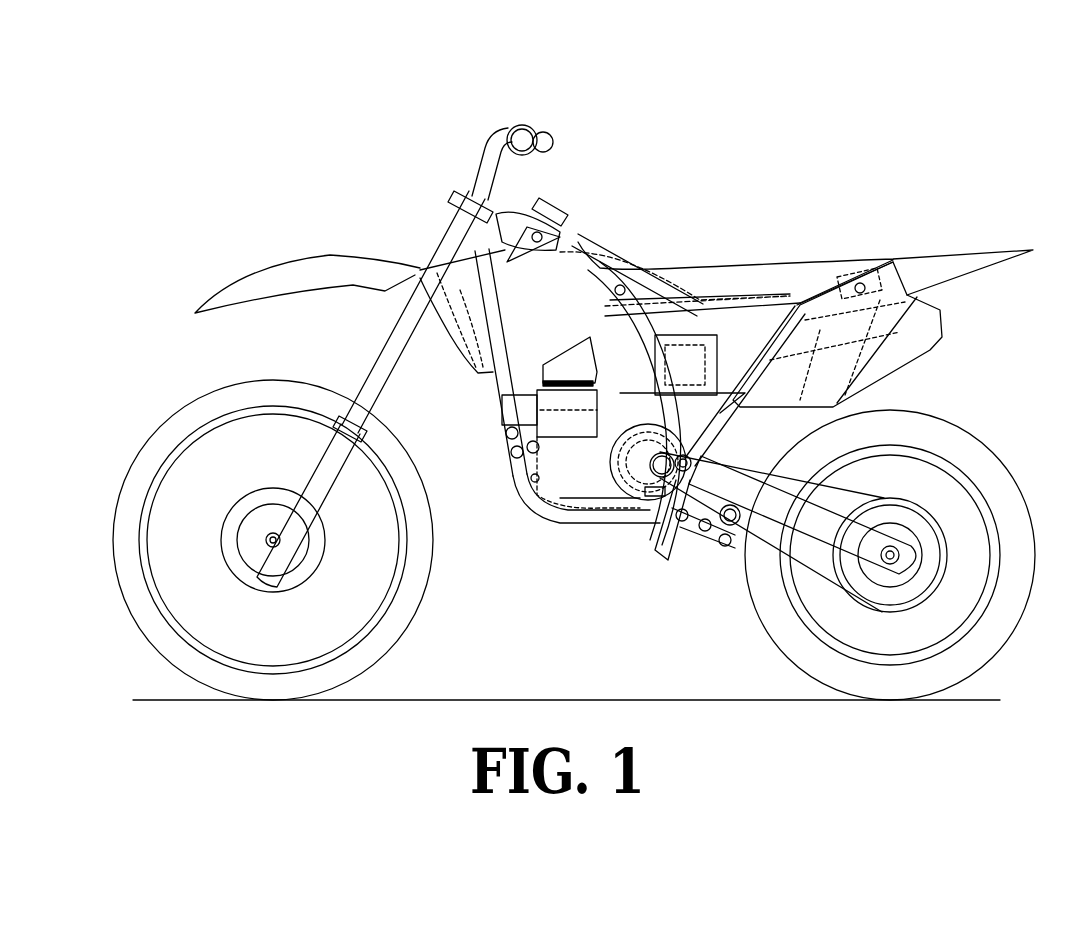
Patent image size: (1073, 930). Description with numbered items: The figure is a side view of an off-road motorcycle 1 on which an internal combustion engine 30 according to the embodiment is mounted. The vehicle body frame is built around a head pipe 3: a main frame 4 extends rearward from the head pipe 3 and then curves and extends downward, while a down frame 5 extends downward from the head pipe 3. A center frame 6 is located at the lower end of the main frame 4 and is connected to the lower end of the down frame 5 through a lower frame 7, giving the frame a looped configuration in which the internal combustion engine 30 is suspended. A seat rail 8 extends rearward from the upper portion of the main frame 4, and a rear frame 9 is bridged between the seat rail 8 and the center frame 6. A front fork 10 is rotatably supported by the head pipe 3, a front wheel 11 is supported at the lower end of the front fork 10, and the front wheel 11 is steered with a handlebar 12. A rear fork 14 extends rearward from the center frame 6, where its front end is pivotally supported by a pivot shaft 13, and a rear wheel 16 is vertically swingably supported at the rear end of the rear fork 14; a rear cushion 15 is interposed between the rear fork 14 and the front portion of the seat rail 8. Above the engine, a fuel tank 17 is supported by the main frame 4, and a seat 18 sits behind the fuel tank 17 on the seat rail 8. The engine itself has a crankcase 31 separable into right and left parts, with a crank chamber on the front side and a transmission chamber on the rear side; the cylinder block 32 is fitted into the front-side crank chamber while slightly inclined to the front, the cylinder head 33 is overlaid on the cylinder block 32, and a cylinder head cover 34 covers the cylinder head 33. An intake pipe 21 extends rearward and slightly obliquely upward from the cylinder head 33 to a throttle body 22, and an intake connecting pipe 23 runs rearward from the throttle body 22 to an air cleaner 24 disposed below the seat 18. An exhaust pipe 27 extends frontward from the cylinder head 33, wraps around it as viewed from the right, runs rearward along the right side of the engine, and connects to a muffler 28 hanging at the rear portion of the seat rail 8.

The motorcycle 1 is at (619, 128).
The head pipe 3 is at (443, 238).
The main frame 4 is at (688, 303).
The down frame 5 is at (490, 387).
The center frame 6 is at (658, 515).
The lower frame 7 is at (548, 508).
The seat rail 8 is at (782, 262).
The rear frame 9 is at (738, 420).
The front fork 10 is at (387, 355).
The front wheel 11 is at (158, 420).
The handlebar 12 is at (538, 132).
The pivot shaft 13 is at (667, 500).
The rear fork 14 is at (776, 513).
The rear cushion 15 is at (698, 458).
The rear wheel 16 is at (977, 428).
The fuel tank 17 is at (522, 212).
The seat 18 is at (830, 262).
The intake pipe 21 is at (595, 370).
The throttle body 22 is at (616, 290).
The intake connecting pipe 23 is at (700, 325).
The air cleaner 24 is at (746, 330).
The exhaust pipe 27 is at (622, 410).
The muffler 28 is at (893, 367).
The internal combustion engine 30 is at (579, 512).
The crankcase 31 is at (535, 477).
The cylinder block 32 is at (510, 450).
The cylinder head 33 is at (507, 424).
The cylinder head cover 34 is at (557, 350).